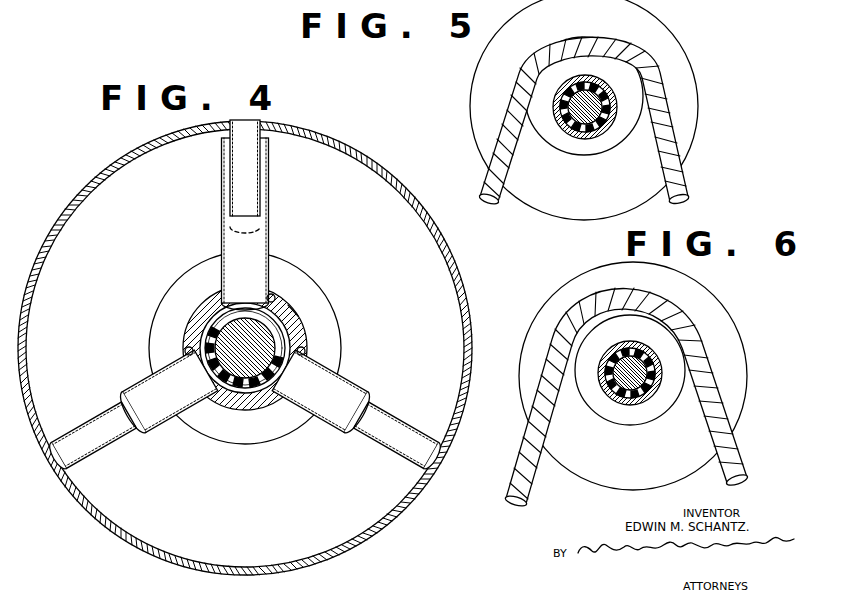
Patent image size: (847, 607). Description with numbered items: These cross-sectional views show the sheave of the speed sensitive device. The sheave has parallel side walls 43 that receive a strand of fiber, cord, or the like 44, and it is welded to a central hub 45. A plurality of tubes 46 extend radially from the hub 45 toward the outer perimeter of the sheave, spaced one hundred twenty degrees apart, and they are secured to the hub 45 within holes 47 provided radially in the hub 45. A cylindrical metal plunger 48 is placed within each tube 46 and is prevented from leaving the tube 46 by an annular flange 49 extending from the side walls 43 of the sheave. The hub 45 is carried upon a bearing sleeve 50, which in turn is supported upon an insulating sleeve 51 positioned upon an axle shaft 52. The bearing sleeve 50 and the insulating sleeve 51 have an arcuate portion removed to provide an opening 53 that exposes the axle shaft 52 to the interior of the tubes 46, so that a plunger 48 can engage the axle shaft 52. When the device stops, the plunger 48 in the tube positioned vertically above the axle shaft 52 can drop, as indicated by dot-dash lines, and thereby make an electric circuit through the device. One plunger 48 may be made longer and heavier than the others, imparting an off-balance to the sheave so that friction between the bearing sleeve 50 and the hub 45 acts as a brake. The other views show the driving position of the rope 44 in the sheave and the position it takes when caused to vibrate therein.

In FIG. 5, the side walls 43 is at (599, 186).
In FIG. 6, the side walls 43 is at (648, 458).
In FIG. 5, the strand of fiber 44 is at (631, 62).
In FIG. 6, the strand of fiber 44 is at (691, 329).
In FIG. 4, the hub 45 is at (204, 305).
In FIG. 5, the hub 45 is at (605, 82).
In FIG. 6, the hub 45 is at (637, 348).
In FIG. 4, the tubes 46 is at (221, 184).
In FIG. 4, the holes 47 is at (268, 297).
In FIG. 4, the cylindrical metal plunger 48 is at (259, 172).
In FIG. 4, the annular flange 49 is at (85, 194).
In FIG. 5, the annular flange 49 is at (584, 110).
In FIG. 6, the annular flange 49 is at (633, 376).
In FIG. 4, the bearing sleeve 50 is at (223, 405).
In FIG. 5, the bearing sleeve 50 is at (578, 134).
In FIG. 6, the bearing sleeve 50 is at (619, 404).
In FIG. 4, the insulating sleeve 51 is at (262, 405).
In FIG. 5, the insulating sleeve 51 is at (599, 132).
In FIG. 6, the insulating sleeve 51 is at (645, 402).
In FIG. 4, the axle shaft 52 is at (232, 336).
In FIG. 5, the axle shaft 52 is at (606, 96).
In FIG. 6, the axle shaft 52 is at (613, 362).
In FIG. 4, the opening 53 is at (297, 310).